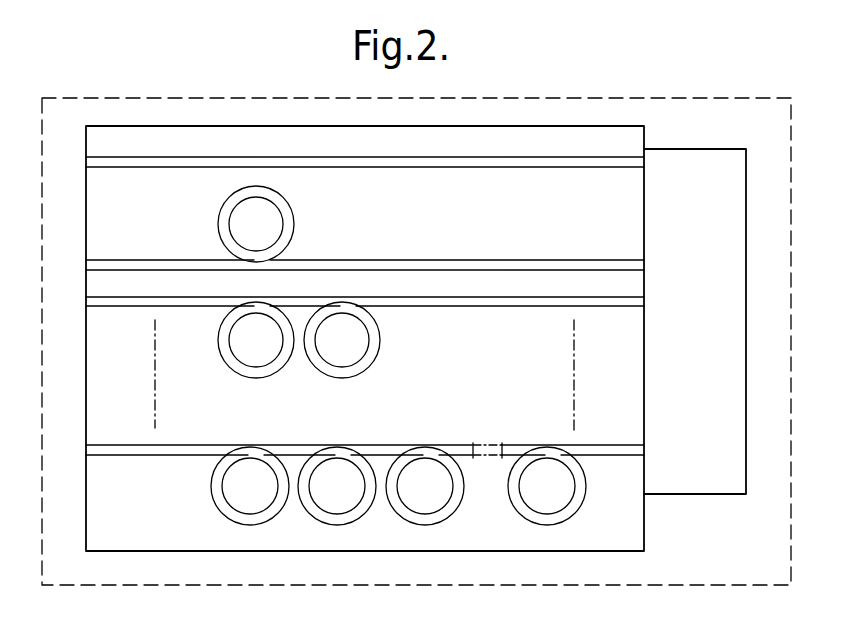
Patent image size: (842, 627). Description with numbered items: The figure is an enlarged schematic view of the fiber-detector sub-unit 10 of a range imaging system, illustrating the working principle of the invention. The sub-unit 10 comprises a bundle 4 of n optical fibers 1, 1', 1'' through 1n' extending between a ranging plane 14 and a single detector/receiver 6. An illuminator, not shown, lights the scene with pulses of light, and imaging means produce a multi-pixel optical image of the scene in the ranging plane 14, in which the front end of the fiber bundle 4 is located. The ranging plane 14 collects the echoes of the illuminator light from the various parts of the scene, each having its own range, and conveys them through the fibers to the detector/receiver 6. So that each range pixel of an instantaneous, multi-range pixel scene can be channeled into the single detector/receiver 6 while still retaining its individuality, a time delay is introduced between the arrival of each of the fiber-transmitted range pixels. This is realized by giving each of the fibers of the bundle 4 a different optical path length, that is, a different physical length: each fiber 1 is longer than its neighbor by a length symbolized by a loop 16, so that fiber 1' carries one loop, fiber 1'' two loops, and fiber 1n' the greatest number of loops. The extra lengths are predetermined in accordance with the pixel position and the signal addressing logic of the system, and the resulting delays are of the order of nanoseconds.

The optical fiber 1 is at (163, 194).
The optical fiber 1' is at (133, 237).
The optical fiber 1'' is at (365, 337).
The optical fiber 1n' is at (365, 484).
The bundle of optical fibers 4 is at (597, 218).
The detector/receiver 6 is at (702, 347).
The fiber-detector sub-unit 10 is at (791, 281).
The ranging plane 14 is at (86, 212).
The loop 16 is at (296, 214).